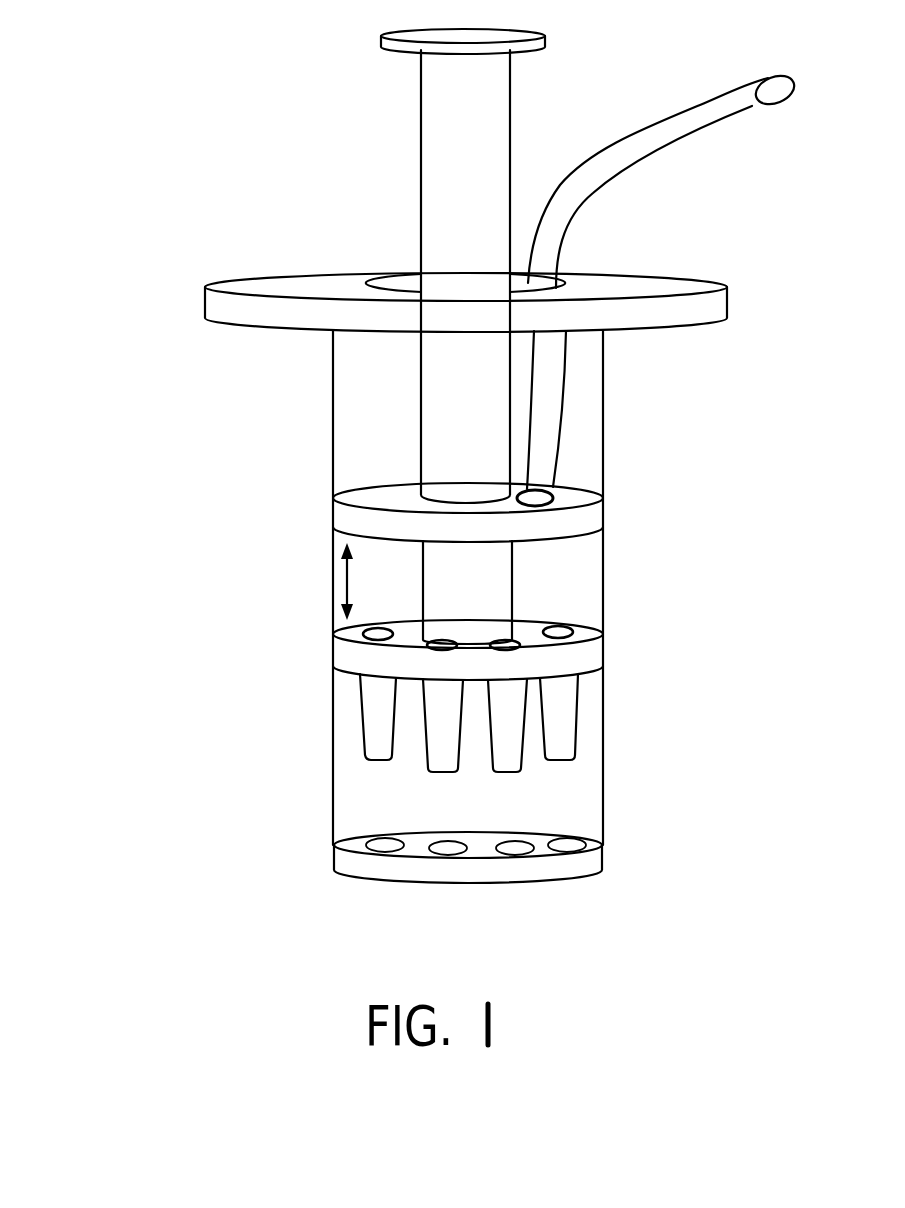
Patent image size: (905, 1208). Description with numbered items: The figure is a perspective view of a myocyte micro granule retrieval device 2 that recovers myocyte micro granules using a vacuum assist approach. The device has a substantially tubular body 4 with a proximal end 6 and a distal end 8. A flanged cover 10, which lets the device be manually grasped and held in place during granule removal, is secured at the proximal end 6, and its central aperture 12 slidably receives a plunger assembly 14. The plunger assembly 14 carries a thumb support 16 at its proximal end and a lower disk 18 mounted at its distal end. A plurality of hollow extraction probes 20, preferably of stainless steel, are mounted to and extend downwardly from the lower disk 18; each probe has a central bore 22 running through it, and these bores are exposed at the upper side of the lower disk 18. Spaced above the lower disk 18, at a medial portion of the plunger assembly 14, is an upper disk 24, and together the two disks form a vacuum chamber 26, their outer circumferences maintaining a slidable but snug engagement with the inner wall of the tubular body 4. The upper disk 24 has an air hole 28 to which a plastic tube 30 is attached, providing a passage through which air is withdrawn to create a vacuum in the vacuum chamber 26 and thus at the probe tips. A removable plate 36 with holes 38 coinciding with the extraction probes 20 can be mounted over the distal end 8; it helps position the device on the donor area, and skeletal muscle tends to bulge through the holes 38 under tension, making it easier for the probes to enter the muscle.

The myocyte micro granule retrieval device 2 is at (132, 300).
The tubular body 4 is at (333, 395).
The proximal end 6 is at (600, 333).
The distal end 8 is at (340, 822).
The flanged cover 10 is at (732, 300).
The central aperture 12 is at (388, 282).
The plunger assembly 14 is at (443, 150).
The thumb support 16 is at (517, 33).
The lower disk 18 is at (355, 660).
The extraction probes 20 is at (445, 745).
The central bore 22 is at (436, 636).
The upper disk 24 is at (352, 515).
The vacuum chamber 26 is at (340, 582).
The air hole 28 is at (560, 494).
The plastic tube 30 is at (690, 115).
The removable plate 36 is at (565, 870).
The holes 38 is at (433, 857).